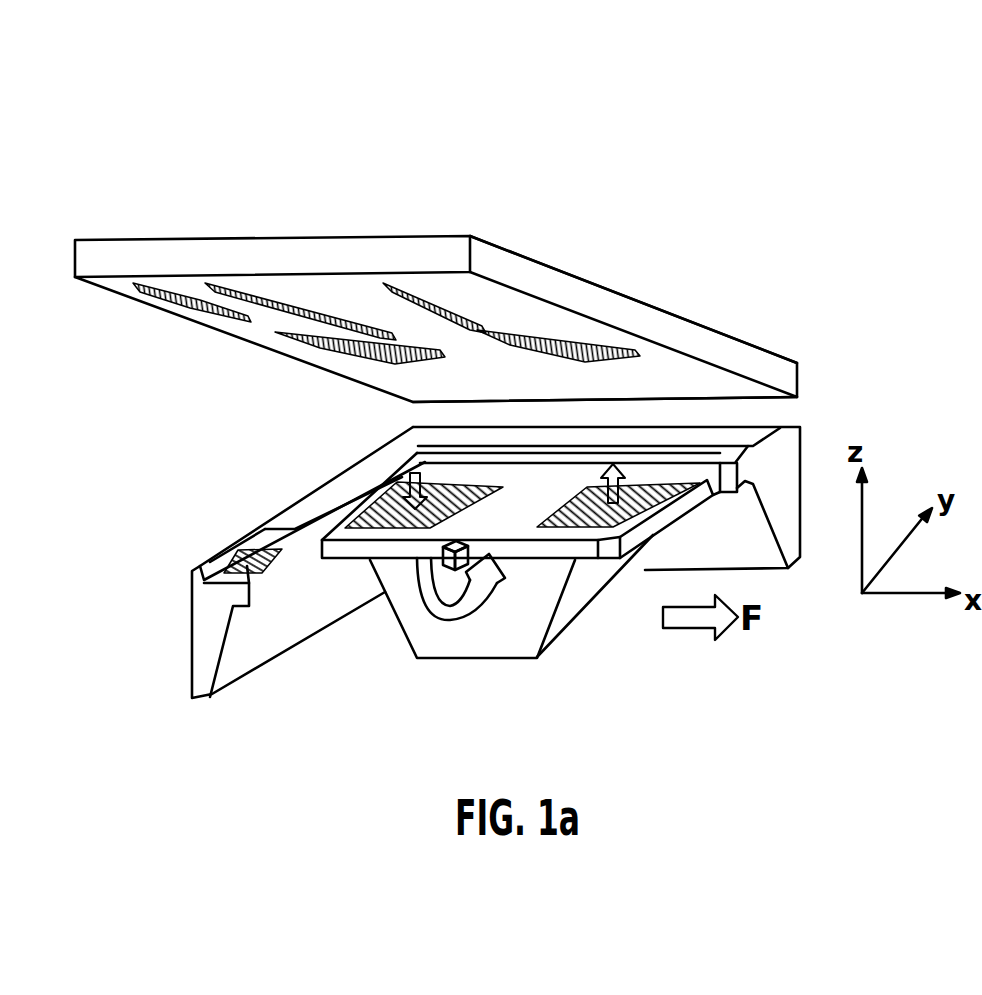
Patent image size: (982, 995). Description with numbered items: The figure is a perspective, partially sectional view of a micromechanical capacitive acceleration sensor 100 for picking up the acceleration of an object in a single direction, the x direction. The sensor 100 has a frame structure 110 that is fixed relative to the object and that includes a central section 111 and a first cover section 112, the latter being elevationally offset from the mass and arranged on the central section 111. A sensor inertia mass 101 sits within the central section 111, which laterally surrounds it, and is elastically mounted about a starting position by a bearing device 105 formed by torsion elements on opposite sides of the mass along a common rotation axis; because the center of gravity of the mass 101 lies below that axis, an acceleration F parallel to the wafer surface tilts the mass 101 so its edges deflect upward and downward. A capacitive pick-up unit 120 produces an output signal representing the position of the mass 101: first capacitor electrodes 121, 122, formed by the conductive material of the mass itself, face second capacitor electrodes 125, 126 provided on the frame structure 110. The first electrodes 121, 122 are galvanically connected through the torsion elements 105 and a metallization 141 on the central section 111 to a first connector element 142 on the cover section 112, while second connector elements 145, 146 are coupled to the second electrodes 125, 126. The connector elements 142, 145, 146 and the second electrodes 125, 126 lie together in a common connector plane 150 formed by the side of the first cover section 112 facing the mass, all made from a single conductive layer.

The micromechanical capacitive acceleration sensor 100 is at (165, 680).
The sensor inertia mass 101 is at (517, 625).
The bearing device 105 is at (462, 565).
The frame structure 110 is at (826, 361).
The central section 111 is at (310, 503).
The first cover section 112 is at (680, 335).
The capacitive pick-up unit 120 is at (306, 384).
The first capacitor electrode 121 is at (408, 528).
The first capacitor electrode 122 is at (603, 515).
The second capacitor electrode 125 is at (410, 333).
The second capacitor electrode 126 is at (535, 325).
The metallization 141 is at (233, 558).
The first connector element 142 is at (150, 293).
The second connector element 145 is at (256, 283).
The second connector element 146 is at (388, 283).
The common connector plane 150 is at (522, 395).